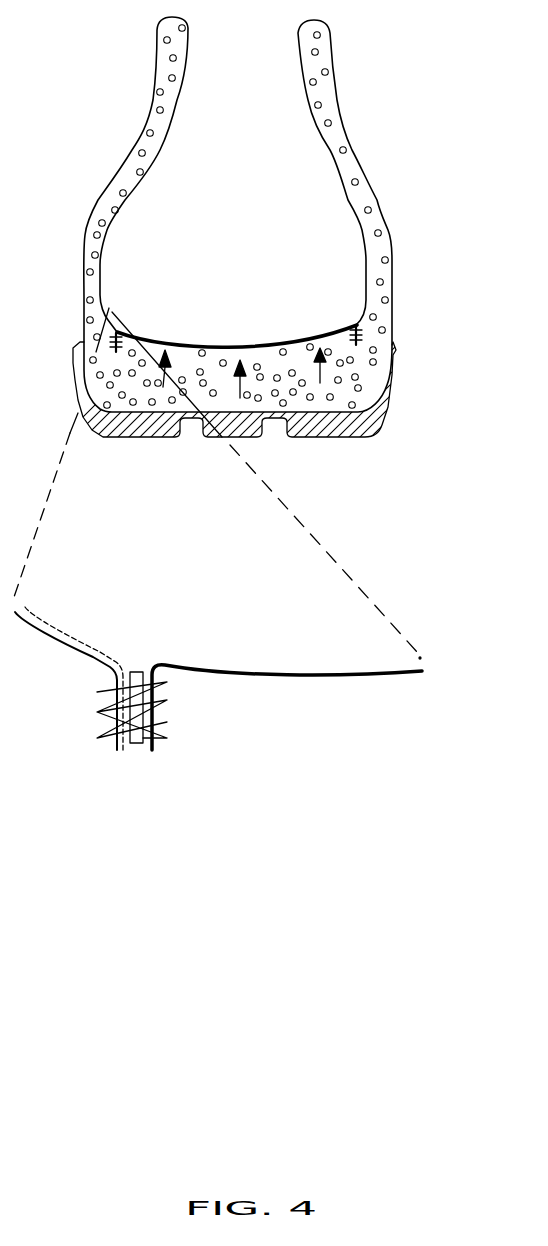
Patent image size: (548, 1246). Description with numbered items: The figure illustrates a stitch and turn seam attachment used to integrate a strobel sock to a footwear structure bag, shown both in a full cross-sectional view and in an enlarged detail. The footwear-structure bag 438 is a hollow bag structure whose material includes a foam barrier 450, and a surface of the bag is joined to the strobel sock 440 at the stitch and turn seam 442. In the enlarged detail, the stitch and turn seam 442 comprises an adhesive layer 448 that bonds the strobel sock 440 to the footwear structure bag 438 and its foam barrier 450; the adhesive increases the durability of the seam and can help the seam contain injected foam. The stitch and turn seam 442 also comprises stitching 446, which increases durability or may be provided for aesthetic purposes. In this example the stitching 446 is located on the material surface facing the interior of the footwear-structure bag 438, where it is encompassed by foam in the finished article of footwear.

The footwear-structure bag 438 is at (155, 97).
The strobel sock 440 is at (262, 348).
The stitch and turn seam 442 is at (113, 330).
The stitching 446 is at (167, 740).
The adhesive layer 448 is at (137, 747).
The foam barrier 450 is at (92, 650).